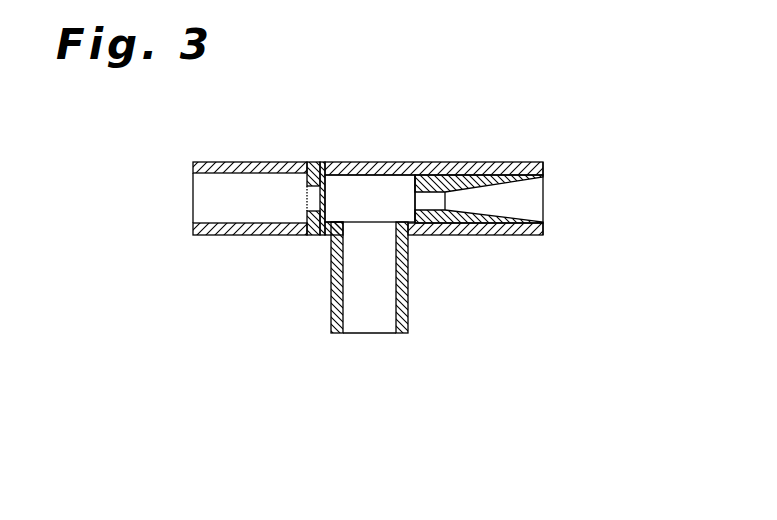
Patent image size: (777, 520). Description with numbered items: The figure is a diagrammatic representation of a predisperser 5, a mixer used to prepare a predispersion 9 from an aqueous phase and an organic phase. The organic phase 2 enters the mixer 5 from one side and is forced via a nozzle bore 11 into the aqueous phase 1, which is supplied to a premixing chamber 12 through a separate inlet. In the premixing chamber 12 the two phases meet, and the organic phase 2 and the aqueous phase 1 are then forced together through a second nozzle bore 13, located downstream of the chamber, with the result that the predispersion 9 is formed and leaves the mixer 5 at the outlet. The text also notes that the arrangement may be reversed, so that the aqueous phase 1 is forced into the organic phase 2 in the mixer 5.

The aqueous phase 1 is at (368, 263).
The organic phase 2 is at (223, 198).
The predisperser 5 is at (375, 162).
The predispersion 9 is at (520, 199).
The nozzle bore 11 is at (310, 210).
The premixing chamber 12 is at (352, 190).
The nozzle bore 13 is at (432, 198).